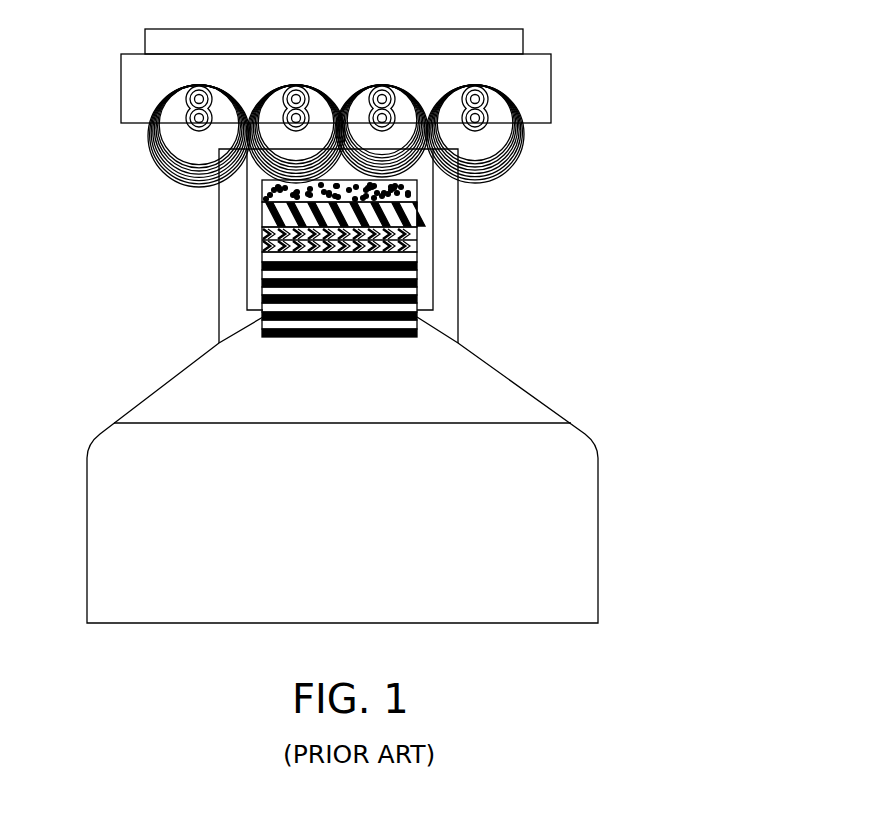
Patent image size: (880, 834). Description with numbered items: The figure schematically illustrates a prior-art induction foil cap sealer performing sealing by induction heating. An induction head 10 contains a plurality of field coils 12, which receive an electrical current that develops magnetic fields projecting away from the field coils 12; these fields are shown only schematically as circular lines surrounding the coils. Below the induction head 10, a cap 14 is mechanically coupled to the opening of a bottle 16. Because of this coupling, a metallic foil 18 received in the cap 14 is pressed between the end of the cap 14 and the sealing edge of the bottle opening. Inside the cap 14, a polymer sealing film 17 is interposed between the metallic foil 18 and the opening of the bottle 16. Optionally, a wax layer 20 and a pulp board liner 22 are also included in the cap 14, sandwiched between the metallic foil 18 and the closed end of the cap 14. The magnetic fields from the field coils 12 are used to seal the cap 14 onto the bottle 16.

The induction head 10 is at (540, 65).
The field coils 12 is at (486, 98).
The cap 14 is at (233, 274).
The bottle 16 is at (166, 385).
The polymer sealing film 17 is at (416, 247).
The metallic foil 18 is at (262, 237).
The wax layer 20 is at (262, 215).
The pulp board liner 22 is at (415, 192).